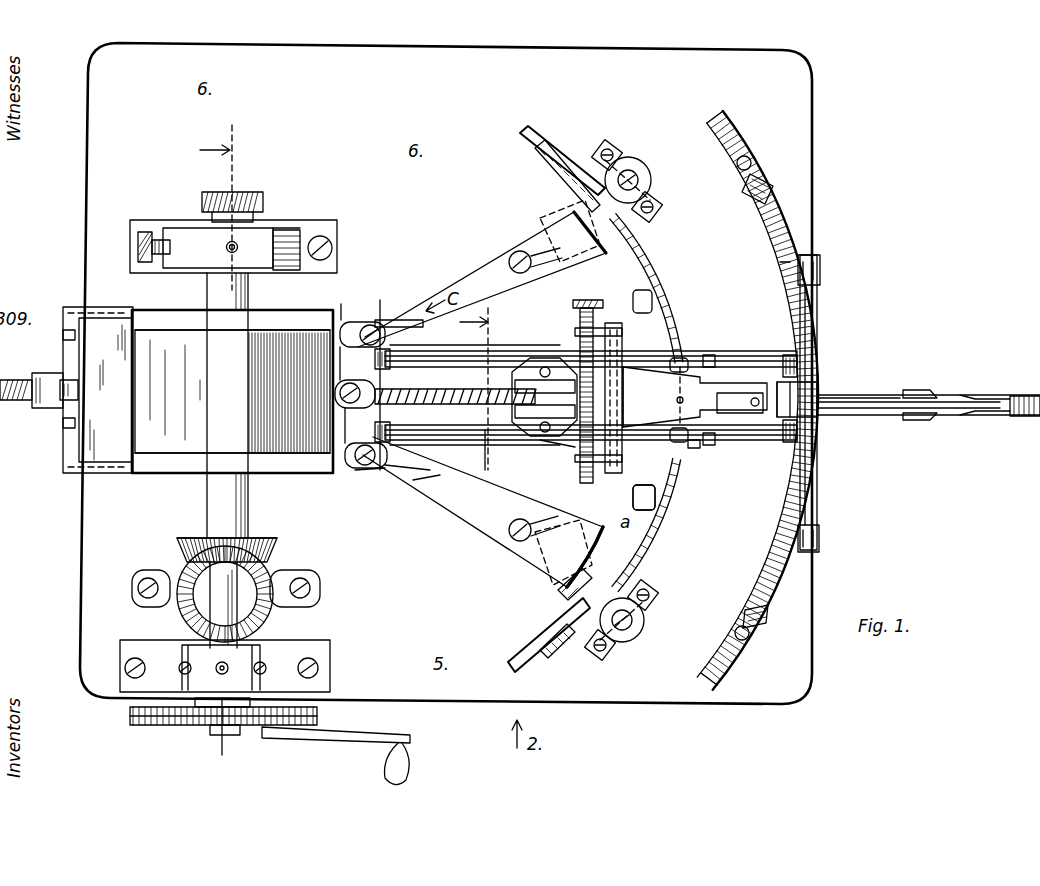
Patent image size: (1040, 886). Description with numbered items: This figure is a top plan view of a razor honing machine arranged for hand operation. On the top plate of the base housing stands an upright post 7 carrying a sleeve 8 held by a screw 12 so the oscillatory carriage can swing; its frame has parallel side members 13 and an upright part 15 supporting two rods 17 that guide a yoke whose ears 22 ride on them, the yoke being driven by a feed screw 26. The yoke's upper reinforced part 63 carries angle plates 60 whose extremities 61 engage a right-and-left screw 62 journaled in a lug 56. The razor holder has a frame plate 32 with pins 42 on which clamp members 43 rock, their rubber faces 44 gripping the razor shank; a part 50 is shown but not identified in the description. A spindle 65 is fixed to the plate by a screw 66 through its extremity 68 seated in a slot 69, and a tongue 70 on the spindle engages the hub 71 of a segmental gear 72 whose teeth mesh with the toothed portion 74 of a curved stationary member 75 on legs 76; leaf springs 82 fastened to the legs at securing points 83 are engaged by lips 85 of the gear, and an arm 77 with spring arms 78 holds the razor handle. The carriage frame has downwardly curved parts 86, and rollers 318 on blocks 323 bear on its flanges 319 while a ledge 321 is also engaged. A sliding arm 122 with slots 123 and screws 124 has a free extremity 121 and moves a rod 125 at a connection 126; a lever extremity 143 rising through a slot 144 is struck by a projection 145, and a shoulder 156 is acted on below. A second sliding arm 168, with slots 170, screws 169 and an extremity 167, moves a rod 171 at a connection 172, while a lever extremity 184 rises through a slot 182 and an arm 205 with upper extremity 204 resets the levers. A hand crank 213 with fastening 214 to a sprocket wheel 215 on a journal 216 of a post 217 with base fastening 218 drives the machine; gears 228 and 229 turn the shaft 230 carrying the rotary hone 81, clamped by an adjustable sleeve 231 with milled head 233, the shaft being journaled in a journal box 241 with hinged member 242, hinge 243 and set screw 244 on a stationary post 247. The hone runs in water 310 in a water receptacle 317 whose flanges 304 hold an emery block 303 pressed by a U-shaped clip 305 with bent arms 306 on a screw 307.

The upright post 7 is at (474, 391).
The sleeve 8 is at (216, 452).
The screw 12 is at (368, 322).
The parallel side members 13 is at (535, 353).
The upright part 15 is at (397, 395).
The rods 17 is at (762, 383).
The ears 22 is at (712, 355).
The feed screw 26 is at (455, 387).
The frame plate 32 is at (695, 397).
The pins 42 is at (532, 386).
The clamp members 43 is at (530, 360).
The faces 44 is at (532, 417).
The spring clips 50 is at (680, 365).
The lug 56 is at (530, 445).
The angle plates 60 is at (592, 340).
The extremities 61 is at (605, 342).
The screw 62 is at (595, 300).
The upper reinforced part 63 is at (626, 396).
The spindle 65 is at (842, 398).
The screw 66 is at (755, 408).
The extremity 68 is at (785, 380).
The slot 69 is at (736, 393).
The tongue 70 is at (855, 415).
The hub 71 is at (800, 392).
The segmental gear 72 is at (818, 458).
The toothed portion 74 is at (782, 232).
The curved stationary member 75 is at (780, 264).
The legs 76 is at (742, 130).
The arm 77 is at (1000, 413).
The spring arms 78 is at (936, 390).
The rotary hone 81 is at (232, 391).
The leaf springs 82 is at (768, 178).
The securing point 83 is at (750, 160).
The lips 85 is at (820, 262).
The downwardly curved parts 86 is at (655, 262).
The free extremity 121 is at (604, 557).
The arm 122 is at (483, 512).
The slots 123 is at (387, 470).
The screws 124 is at (362, 466).
The rod 125 is at (352, 478).
The connection 126 is at (413, 482).
The upwardly turned extremity 143 is at (548, 656).
The slot 144 is at (514, 660).
The projection 145 is at (652, 494).
The shoulder 156 is at (560, 592).
The extremity 167 is at (600, 236).
The arm 168 is at (482, 279).
The screws 169 is at (386, 320).
The slots 170 is at (393, 318).
The rod 171 is at (346, 304).
The connection 172 is at (420, 336).
The slot 182 is at (522, 131).
The upwardly bent extremity 184 is at (553, 140).
The upper extremity 204 is at (613, 147).
The arm 205 is at (571, 206).
The hand crank 213 is at (336, 756).
The securing point 214 is at (238, 735).
The sprocket wheel 215 is at (140, 728).
The journal 216 is at (196, 730).
The post 217 is at (304, 655).
The securing point 218 is at (125, 668).
The gear 228 is at (177, 545).
The gear 229 is at (277, 546).
The shaft 230 is at (208, 600).
The adjustable sleeve 231 is at (207, 295).
The milled head 233 is at (220, 192).
The journal box 241 is at (290, 230).
The hinged member 242 is at (233, 246).
The hinge 243 is at (308, 226).
The set screw 244 is at (147, 232).
The stationary post 247 is at (328, 238).
The block 303 is at (105, 390).
The flanges 304 is at (70, 307).
The U-shaped clip 305 is at (49, 373).
The bent arms 306 is at (63, 332).
The screw 307 is at (14, 380).
The water 310 is at (195, 473).
The water receptacle 317 is at (174, 475).
The rollers 318 is at (650, 172).
The flanges 319 is at (660, 210).
The ledge 321 is at (693, 450).
The blocks 323 is at (655, 602).